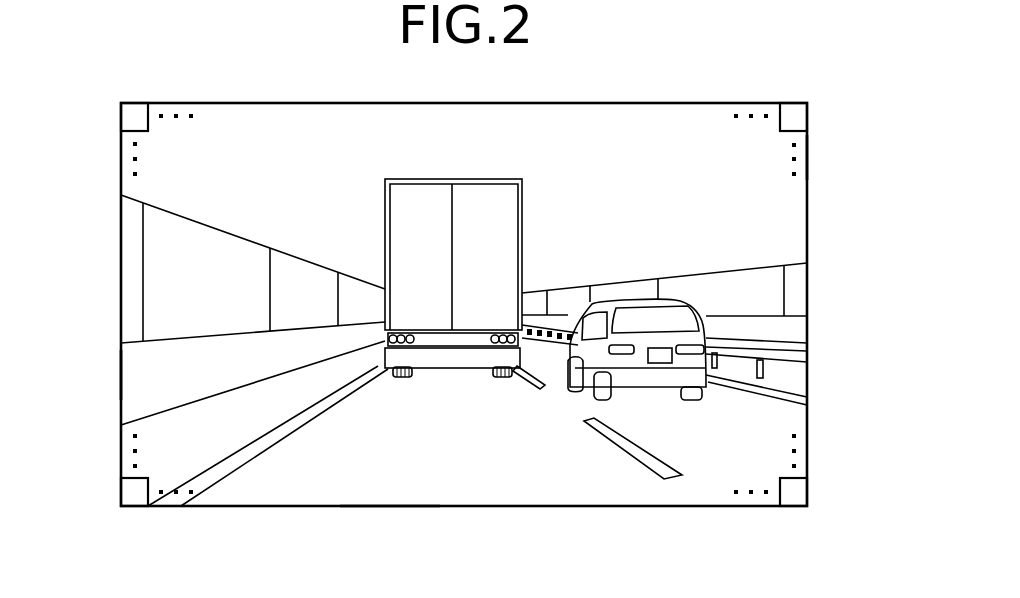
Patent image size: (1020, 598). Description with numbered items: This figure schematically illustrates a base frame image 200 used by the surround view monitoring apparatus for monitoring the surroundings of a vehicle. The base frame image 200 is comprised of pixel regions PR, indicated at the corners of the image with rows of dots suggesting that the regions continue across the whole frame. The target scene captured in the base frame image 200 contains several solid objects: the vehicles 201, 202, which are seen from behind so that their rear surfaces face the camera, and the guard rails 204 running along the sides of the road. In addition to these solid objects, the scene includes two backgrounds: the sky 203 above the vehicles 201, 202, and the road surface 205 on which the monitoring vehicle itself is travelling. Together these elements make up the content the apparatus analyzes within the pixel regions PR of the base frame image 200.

The base frame image 200 is at (772, 103).
The vehicle 201 is at (425, 195).
The vehicle 202 is at (677, 322).
The sky 203 is at (798, 155).
The guard rails 204 is at (148, 369).
The road surface 205 is at (391, 477).
The pixel regions PR is at (135, 117).